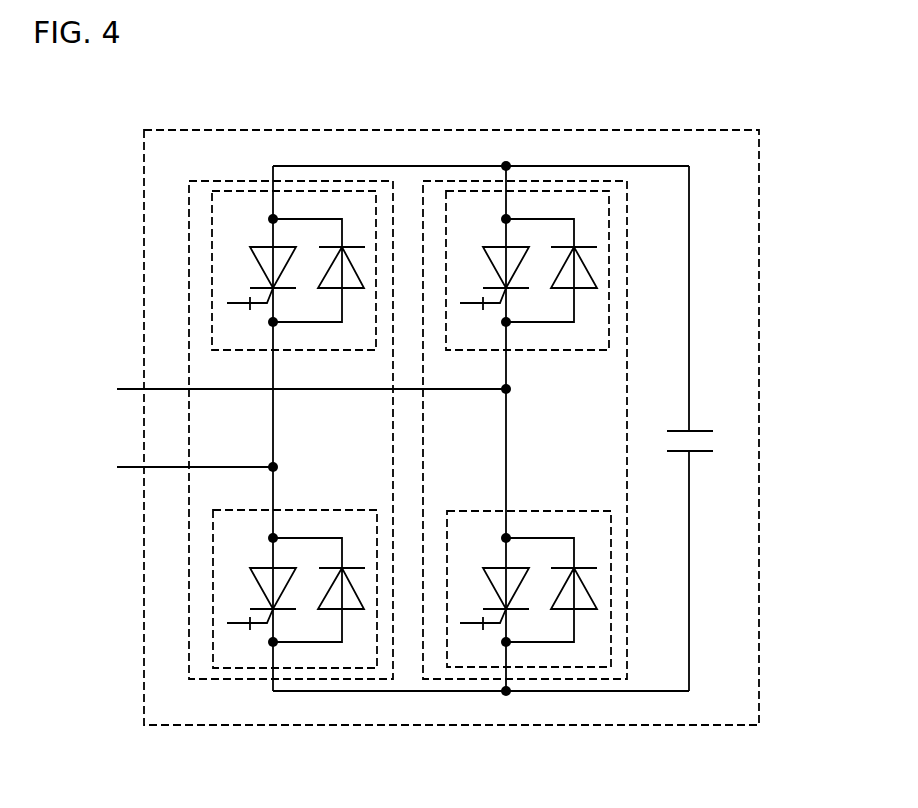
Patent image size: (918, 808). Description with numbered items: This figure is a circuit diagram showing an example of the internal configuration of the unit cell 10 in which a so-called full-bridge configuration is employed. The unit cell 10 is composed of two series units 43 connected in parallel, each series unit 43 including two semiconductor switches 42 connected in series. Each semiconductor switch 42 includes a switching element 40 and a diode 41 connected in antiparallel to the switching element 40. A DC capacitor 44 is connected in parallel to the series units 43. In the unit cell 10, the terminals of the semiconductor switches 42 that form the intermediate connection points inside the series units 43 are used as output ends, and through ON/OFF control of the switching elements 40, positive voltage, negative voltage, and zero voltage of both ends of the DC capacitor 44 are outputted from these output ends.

The unit cell 10 is at (759, 147).
The switching element 40 is at (287, 243).
The diode 41 is at (355, 242).
The semiconductor switch 42 is at (209, 260).
The series unit 43 is at (188, 200).
The DC capacitor 44 is at (697, 427).